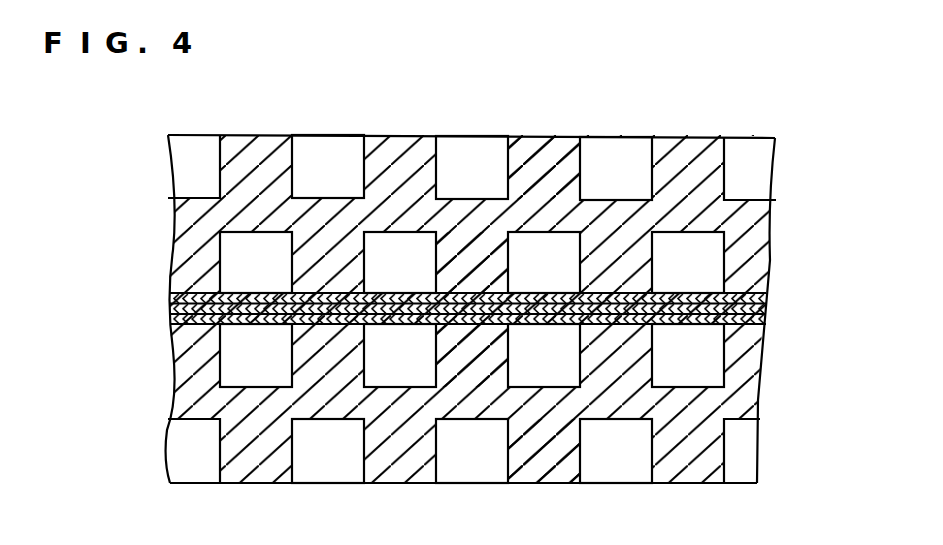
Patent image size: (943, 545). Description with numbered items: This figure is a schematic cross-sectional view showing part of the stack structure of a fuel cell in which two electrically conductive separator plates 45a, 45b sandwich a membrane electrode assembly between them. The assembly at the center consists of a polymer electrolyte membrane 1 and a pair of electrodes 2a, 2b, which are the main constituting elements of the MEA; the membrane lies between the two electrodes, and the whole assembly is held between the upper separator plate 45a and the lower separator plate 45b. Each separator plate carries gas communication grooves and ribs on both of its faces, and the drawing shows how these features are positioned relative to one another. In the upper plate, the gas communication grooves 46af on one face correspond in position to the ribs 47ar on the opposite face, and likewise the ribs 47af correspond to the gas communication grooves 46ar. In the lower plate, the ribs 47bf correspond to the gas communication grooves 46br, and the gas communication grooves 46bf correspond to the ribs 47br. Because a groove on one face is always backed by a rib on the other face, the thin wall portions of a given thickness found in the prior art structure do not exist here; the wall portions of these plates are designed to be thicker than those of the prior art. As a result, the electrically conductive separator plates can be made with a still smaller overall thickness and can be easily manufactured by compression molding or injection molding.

The polymer electrolyte membrane 1 is at (172, 307).
The electrode 2a is at (172, 296).
The electrode 2b is at (172, 320).
The electrically conductive separator plate 45a is at (162, 218).
The electrically conductive separator plate 45b is at (163, 381).
The gas communication groove 46af is at (467, 157).
The gas communication groove 46ar is at (537, 253).
The rib 47af is at (542, 163).
The rib 47ar is at (472, 255).
The gas communication groove 46bf is at (553, 363).
The gas communication groove 46br is at (472, 455).
The rib 47bf is at (468, 358).
The rib 47br is at (542, 460).